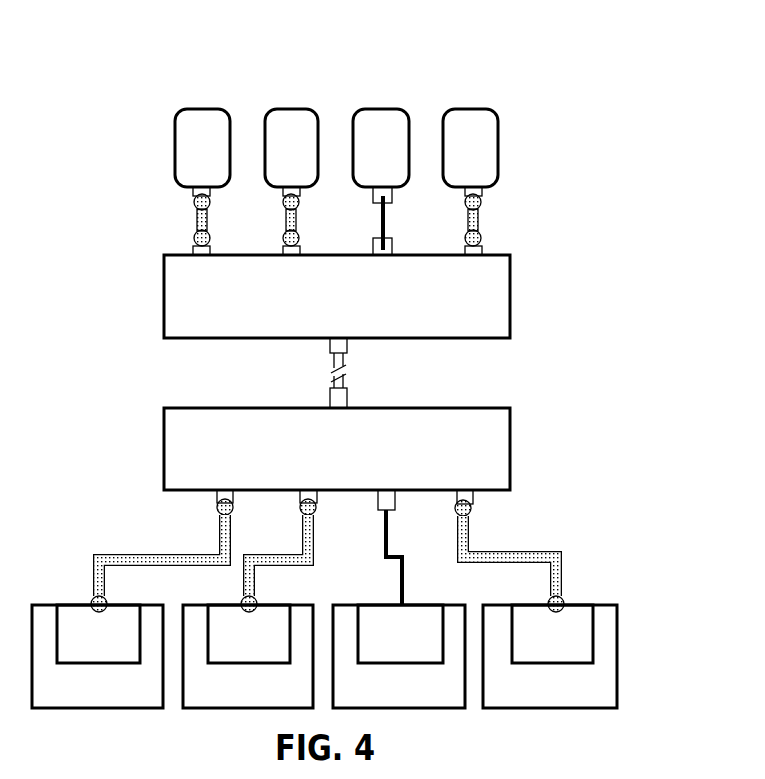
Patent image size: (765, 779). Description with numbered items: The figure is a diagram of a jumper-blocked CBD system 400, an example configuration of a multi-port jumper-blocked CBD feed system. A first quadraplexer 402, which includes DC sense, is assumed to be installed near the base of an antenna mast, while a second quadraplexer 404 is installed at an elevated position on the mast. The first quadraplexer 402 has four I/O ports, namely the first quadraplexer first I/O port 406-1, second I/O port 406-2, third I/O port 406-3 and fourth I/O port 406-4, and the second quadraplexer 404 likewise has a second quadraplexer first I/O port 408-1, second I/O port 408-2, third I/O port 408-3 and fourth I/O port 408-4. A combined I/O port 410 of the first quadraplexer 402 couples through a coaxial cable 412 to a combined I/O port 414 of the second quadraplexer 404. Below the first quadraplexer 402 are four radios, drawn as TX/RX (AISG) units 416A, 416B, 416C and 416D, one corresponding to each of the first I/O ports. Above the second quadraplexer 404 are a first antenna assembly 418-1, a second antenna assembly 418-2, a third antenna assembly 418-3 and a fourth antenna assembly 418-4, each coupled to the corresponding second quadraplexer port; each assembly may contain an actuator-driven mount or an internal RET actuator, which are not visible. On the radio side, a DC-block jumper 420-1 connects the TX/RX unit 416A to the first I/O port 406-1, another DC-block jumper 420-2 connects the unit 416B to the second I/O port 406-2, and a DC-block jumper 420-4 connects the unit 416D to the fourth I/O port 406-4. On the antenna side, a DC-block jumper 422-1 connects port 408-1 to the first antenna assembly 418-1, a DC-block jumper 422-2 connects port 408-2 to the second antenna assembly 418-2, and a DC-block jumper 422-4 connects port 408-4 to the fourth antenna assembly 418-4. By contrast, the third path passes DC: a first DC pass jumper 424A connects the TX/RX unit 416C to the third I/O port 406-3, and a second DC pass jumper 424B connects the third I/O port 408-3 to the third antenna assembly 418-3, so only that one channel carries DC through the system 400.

The jumper-blocked CBD system 400 is at (601, 52).
The first quadraplexer 402 is at (488, 407).
The second quadraplexer 404 is at (512, 288).
The first quadraplexer first I/O port 406-1 is at (217, 508).
The first quadraplexer second I/O port 406-2 is at (304, 515).
The first quadraplexer third I/O port 406-3 is at (380, 515).
The first quadraplexer fourth I/O port 406-4 is at (458, 516).
The second quadraplexer first I/O port 408-1 is at (193, 240).
The second quadraplexer second I/O port 408-2 is at (283, 240).
The second quadraplexer third I/O port 408-3 is at (373, 242).
The second quadraplexer fourth I/O port 408-4 is at (482, 240).
The combined I/O port 410 is at (330, 400).
The coaxial cable 412 is at (353, 376).
The combined I/O port 414 is at (330, 348).
The Tx/Rx (AISG) unit 416A is at (97, 656).
The Tx/Rx (AISG) unit 416B is at (248, 656).
The Tx/Rx (AISG) unit 416C is at (399, 656).
The Tx/Rx (AISG) unit 416D is at (550, 656).
The first antenna assembly 418-1 is at (210, 110).
The second antenna assembly 418-2 is at (300, 110).
The third antenna assembly 418-3 is at (386, 110).
The fourth antenna assembly 418-4 is at (482, 110).
The DC-block jumper 420-1 is at (125, 566).
The DC-block jumper 420-2 is at (277, 566).
The DC-block jumper 420-4 is at (510, 553).
The DC-block jumper 422-1 is at (196, 218).
The DC-block jumper 422-2 is at (287, 218).
The DC-block jumper 422-4 is at (478, 216).
The first DC pass jumper 424A is at (405, 566).
The second DC pass jumper 424B is at (386, 232).